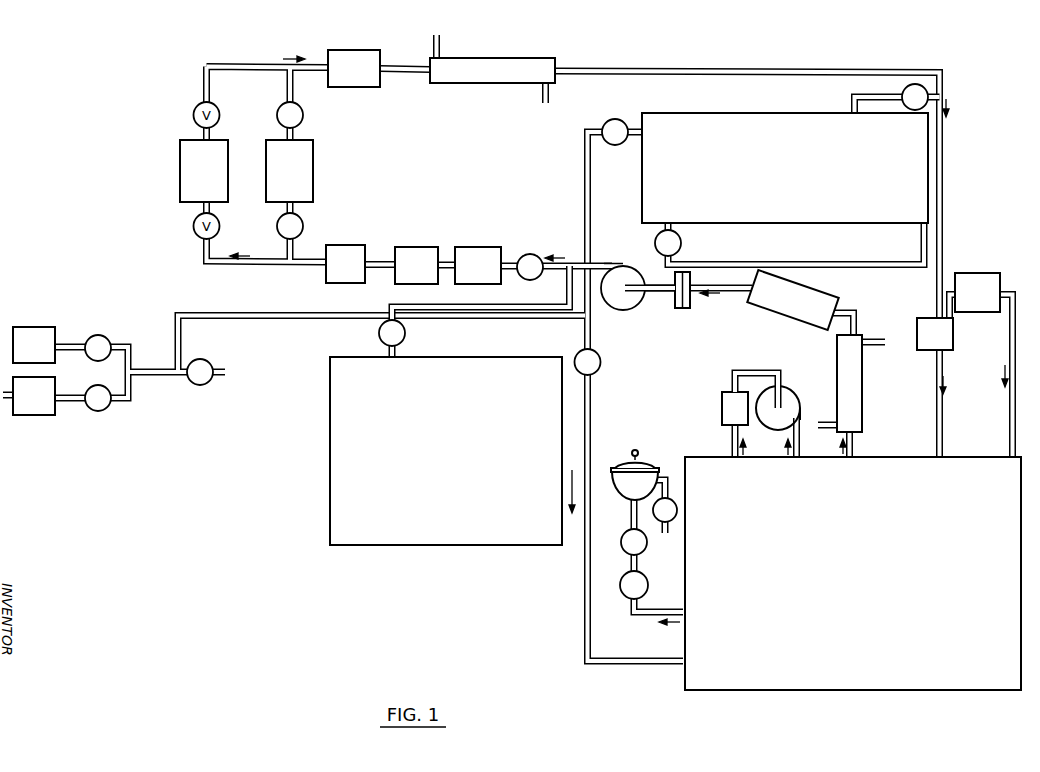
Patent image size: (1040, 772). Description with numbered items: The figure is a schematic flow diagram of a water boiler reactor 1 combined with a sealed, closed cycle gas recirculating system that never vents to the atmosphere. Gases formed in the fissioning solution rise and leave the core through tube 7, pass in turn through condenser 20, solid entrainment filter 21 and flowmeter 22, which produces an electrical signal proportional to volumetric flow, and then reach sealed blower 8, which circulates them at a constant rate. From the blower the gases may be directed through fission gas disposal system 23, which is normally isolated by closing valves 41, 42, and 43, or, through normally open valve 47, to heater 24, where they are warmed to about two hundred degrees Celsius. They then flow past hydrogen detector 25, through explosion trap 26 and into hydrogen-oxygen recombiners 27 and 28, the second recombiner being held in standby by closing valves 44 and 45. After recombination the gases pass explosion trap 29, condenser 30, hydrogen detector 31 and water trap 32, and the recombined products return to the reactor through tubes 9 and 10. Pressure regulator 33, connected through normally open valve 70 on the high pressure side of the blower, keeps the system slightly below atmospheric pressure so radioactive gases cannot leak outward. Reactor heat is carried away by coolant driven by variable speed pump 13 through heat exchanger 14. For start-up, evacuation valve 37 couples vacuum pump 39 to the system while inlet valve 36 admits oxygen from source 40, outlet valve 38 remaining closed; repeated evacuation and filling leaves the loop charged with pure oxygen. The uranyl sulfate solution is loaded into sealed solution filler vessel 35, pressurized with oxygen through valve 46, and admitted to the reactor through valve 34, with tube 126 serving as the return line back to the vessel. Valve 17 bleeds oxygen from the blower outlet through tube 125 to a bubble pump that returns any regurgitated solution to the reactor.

The reactor 1 is at (683, 676).
The tube 7 is at (853, 440).
The blower 8 is at (628, 302).
The tube 9 is at (940, 430).
The tube 10 is at (1013, 417).
The variable speed pump 13 is at (785, 398).
The heat exchanger 14 is at (736, 408).
The valve 17 is at (600, 364).
The condenser 20 is at (855, 397).
The solid entrainment filter 21 is at (818, 298).
The flowmeter 22 is at (688, 300).
The fission gas disposal system 23 is at (918, 160).
The heater 24 is at (477, 255).
The hydrogen detector 25 is at (416, 255).
The explosion trap 26 is at (333, 272).
The hydrogen-oxygen recombiner 27 is at (186, 172).
The hydrogen-oxygen recombiner 28 is at (303, 168).
The explosion trap 29 is at (347, 58).
The condenser 30 is at (495, 63).
The hydrogen detector 31 is at (982, 276).
The water trap 32 is at (927, 345).
The pressure regulator 33 is at (348, 381).
The valve 34 is at (645, 546).
The solution filler vessel 35 is at (624, 472).
The inlet valve 36 is at (100, 335).
The evacuation valve 37 is at (102, 410).
The outlet valve 38 is at (208, 383).
The vacuum pump 39 is at (27, 405).
The source of oxygen 40 is at (28, 333).
The valve 41 is at (611, 121).
The valve 42 is at (914, 84).
The valve 43 is at (681, 243).
The valve 44 is at (301, 225).
The valve 45 is at (303, 122).
The valve 46 is at (667, 497).
The valve 47 is at (530, 254).
The valve 70 is at (406, 335).
The tube 125 is at (580, 614).
The tube 126 is at (643, 617).